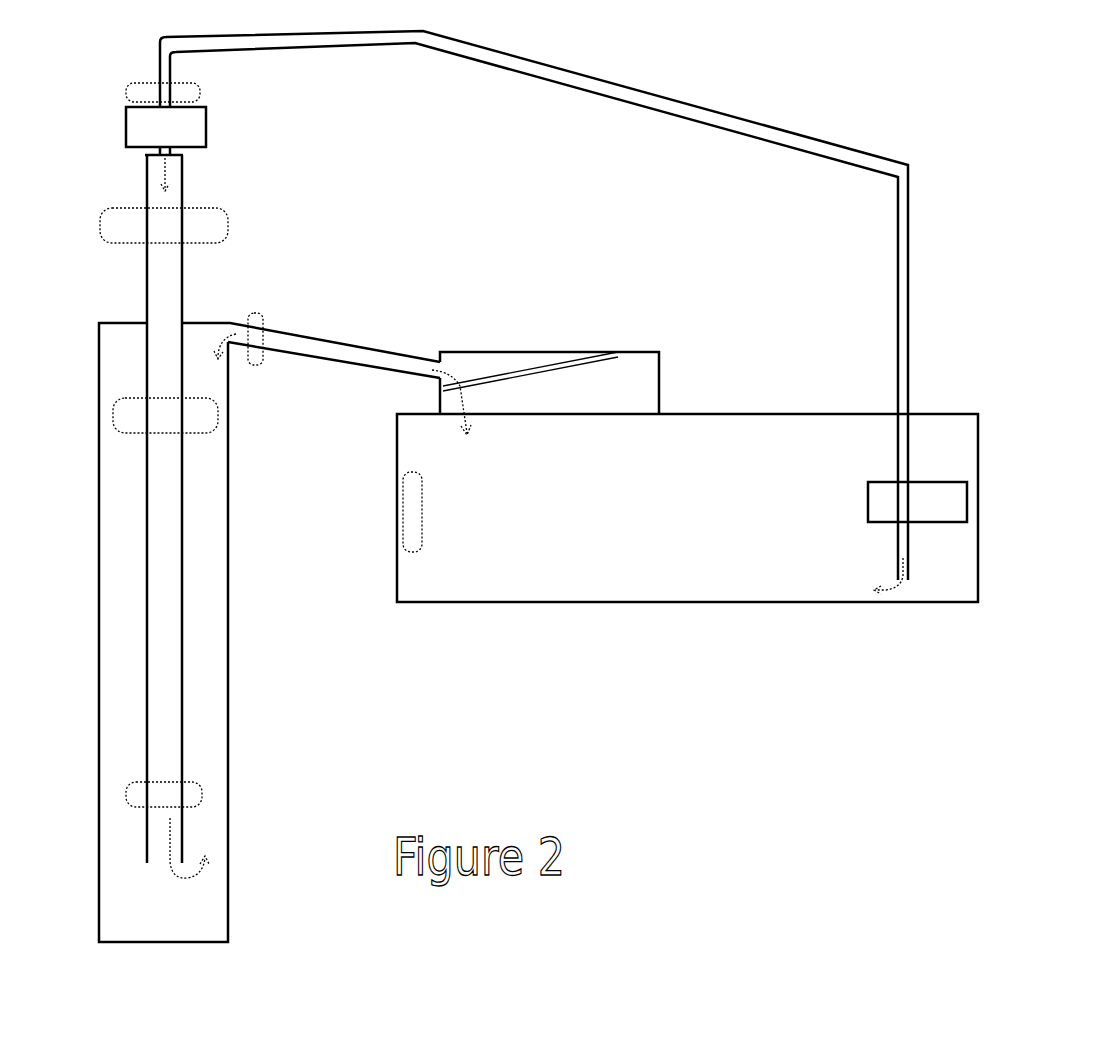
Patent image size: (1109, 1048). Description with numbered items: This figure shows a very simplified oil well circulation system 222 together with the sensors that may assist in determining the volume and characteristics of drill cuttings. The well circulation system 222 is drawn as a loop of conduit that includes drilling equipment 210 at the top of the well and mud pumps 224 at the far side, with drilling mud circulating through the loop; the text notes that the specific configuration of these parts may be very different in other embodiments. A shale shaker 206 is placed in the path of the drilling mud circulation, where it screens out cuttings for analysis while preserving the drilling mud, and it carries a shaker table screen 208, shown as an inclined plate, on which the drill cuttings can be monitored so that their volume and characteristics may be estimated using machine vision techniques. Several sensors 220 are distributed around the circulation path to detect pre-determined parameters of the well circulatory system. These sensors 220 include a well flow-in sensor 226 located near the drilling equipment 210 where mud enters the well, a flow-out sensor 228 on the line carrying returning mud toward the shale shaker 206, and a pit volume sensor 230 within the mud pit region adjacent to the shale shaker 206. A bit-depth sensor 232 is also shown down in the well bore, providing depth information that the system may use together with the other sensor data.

The shale shaker 206 is at (687, 477).
The shaker table screen 208 is at (504, 359).
The drilling equipment 210 is at (166, 127).
The sensors 220 is at (145, 333).
The well circulation system 222 is at (534, 312).
The mud pumps 224 is at (917, 502).
The well flow-in sensor 226 is at (179, 81).
The flow-out sensor 228 is at (311, 331).
The pit volume sensor 230 is at (433, 500).
The bit-depth sensor 232 is at (154, 782).